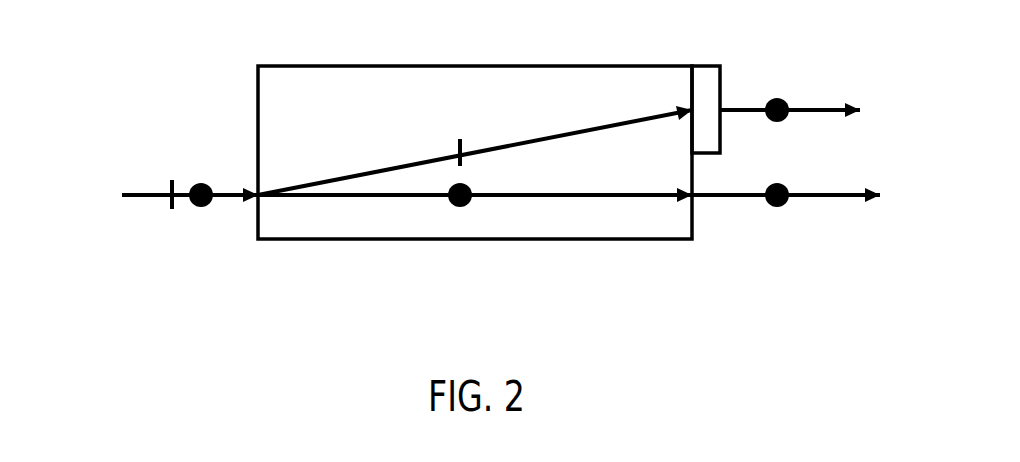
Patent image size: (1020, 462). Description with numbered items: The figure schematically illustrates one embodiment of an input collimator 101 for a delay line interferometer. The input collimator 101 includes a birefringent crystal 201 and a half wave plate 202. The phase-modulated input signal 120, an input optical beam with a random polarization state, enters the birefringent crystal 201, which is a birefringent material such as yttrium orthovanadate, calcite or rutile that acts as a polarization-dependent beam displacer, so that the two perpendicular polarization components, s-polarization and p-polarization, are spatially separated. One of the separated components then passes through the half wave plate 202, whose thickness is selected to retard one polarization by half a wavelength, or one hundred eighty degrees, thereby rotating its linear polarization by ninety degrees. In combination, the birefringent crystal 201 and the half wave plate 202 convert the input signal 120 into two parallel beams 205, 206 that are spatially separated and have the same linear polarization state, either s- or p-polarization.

The input collimator 101 is at (136, 48).
The phase-modulated input signal 120 is at (142, 197).
The birefringent crystal 201 is at (473, 240).
The half wave plate 202 is at (705, 66).
The parallel beam 205 is at (803, 108).
The parallel beam 206 is at (807, 198).